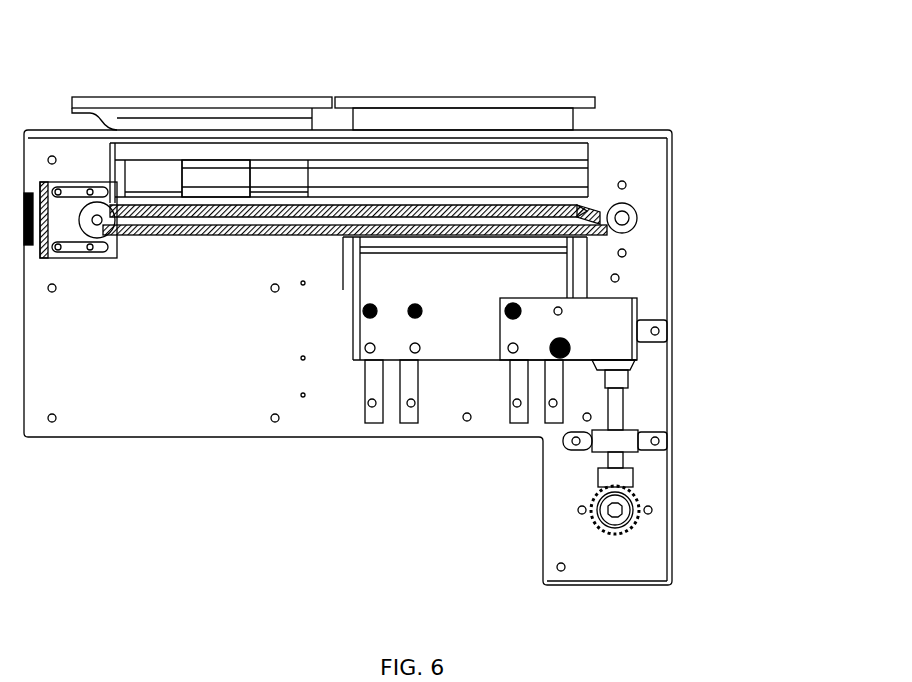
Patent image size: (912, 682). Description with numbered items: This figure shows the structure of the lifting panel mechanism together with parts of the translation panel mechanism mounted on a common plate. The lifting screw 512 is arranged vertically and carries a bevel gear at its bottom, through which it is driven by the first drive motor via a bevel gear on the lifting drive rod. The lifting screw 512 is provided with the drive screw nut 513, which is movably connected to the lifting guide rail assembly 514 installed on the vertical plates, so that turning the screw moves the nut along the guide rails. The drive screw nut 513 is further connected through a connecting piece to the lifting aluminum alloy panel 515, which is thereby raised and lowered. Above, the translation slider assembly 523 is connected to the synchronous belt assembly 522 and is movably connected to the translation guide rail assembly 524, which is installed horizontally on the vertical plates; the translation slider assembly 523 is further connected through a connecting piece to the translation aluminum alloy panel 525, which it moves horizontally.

The lifting screw 512 is at (625, 410).
The drive screw nut 513 is at (580, 312).
The lifting guide rail assembly 514 is at (508, 393).
The lifting aluminum alloy panel 515 is at (493, 98).
The synchronous belt assembly 522 is at (597, 208).
The translation slider assembly 523 is at (152, 182).
The translation guide rail assembly 524 is at (218, 165).
The translation aluminum alloy panel 525 is at (237, 98).